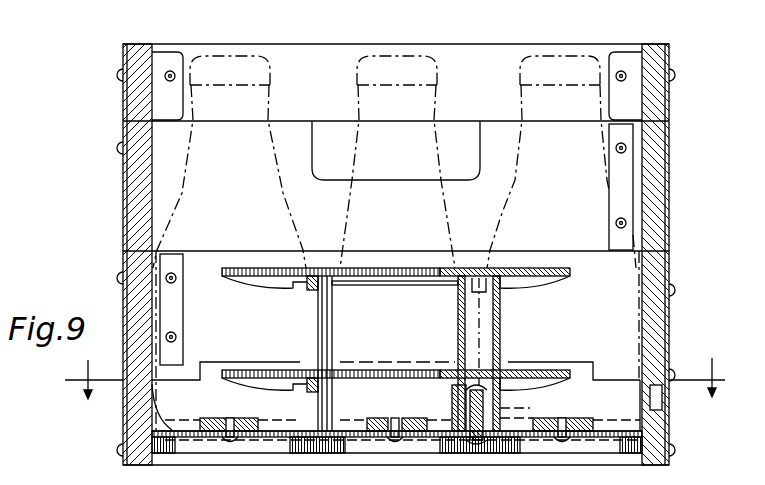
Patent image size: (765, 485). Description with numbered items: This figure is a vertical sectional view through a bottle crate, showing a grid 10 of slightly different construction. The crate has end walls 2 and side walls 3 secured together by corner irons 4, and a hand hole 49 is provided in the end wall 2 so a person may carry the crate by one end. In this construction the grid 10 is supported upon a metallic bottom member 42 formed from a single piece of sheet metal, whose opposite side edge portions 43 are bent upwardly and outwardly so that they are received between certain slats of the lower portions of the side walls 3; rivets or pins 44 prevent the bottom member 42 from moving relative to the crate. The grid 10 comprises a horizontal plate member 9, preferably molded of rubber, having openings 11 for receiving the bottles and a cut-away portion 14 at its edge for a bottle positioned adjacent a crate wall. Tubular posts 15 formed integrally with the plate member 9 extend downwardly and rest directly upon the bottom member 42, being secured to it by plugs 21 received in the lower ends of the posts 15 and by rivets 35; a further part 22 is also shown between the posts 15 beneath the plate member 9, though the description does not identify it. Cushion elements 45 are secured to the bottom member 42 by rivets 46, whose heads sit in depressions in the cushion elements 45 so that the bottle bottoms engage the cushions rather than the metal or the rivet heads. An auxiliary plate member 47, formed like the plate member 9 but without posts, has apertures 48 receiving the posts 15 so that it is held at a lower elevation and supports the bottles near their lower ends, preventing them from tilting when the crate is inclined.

The end wall 2 is at (288, 52).
The side wall 3 is at (123, 170).
The corner iron 4 is at (140, 213).
The horizontal plate member 9 is at (432, 268).
The grid 10 is at (412, 212).
The opening 11 is at (359, 268).
The cut-away portion 14 is at (257, 268).
The tubular post 15 is at (330, 335).
The plug 21 is at (505, 410).
The cross plate 22 is at (395, 285).
The rivet 35 is at (458, 406).
The metallic bottom member 42 is at (520, 446).
The side edge portion 43 is at (152, 404).
The rivet or pin 44 is at (660, 400).
The cushion element 45 is at (210, 425).
The rivet 46 is at (231, 444).
The auxiliary plate member 47 is at (404, 362).
The aperture 48 is at (520, 376).
The hand hole 49 is at (452, 130).